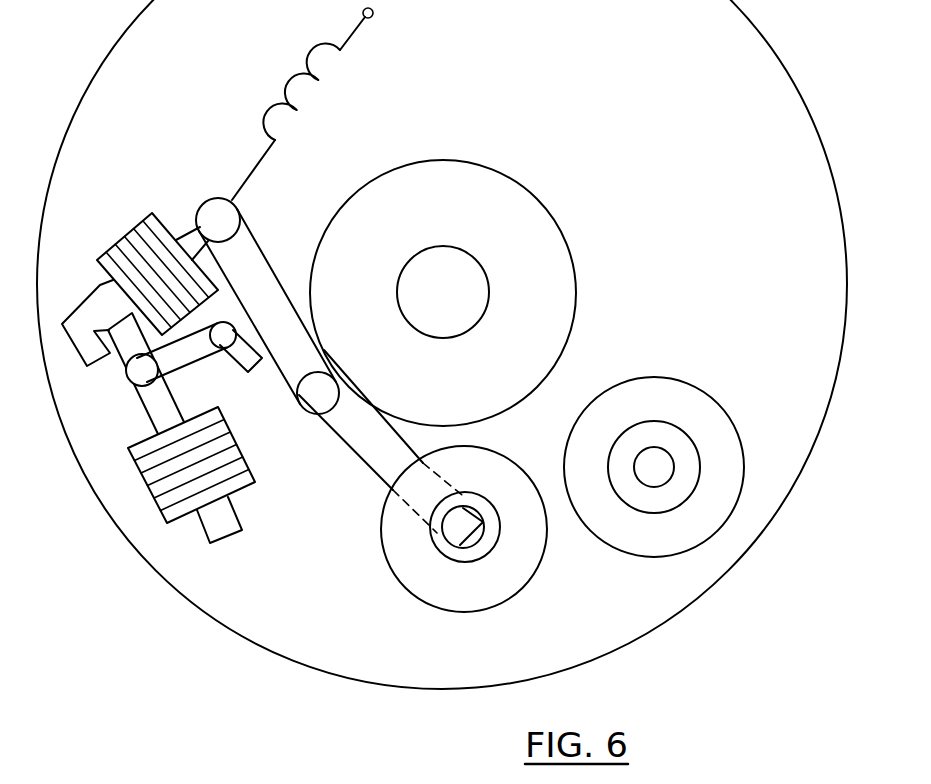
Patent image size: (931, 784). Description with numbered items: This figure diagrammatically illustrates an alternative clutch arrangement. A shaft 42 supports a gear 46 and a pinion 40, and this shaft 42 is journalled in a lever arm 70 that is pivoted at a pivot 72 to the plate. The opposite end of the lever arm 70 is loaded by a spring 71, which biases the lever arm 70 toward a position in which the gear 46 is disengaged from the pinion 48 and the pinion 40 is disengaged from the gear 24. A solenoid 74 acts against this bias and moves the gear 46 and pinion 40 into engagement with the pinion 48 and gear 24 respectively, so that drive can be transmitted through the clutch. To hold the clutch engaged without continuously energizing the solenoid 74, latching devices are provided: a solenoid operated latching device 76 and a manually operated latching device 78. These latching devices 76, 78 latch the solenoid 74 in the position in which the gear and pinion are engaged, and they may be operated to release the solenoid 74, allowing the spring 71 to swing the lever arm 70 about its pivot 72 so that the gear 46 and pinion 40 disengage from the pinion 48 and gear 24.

The gear 24 is at (543, 207).
The pinion 40 is at (493, 503).
The shaft 42 is at (482, 530).
The gear 46 is at (518, 592).
The pinion 48 is at (688, 445).
The lever arm 70 is at (410, 448).
The spring 71 is at (288, 78).
The pivot 72 is at (313, 392).
The solenoid 74 is at (127, 237).
The solenoid operated latching device 76 is at (145, 482).
The manually operated latching device 78 is at (253, 333).